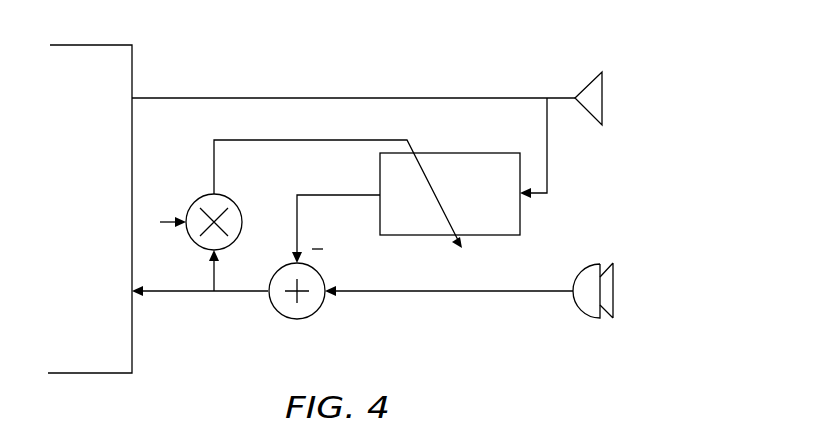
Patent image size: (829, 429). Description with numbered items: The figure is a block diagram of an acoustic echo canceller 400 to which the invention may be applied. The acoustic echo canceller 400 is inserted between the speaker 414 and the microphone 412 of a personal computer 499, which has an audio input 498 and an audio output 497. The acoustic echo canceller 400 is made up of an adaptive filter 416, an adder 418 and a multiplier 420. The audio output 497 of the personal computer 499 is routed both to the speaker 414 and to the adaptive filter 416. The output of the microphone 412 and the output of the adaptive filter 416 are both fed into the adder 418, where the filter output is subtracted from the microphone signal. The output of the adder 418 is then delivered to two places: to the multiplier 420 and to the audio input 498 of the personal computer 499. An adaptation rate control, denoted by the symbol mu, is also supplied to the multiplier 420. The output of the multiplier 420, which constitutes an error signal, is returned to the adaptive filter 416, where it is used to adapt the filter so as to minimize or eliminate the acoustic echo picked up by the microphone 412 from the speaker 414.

The acoustic echo canceller 400 is at (525, 54).
The microphone 412 is at (553, 290).
The speaker 414 is at (632, 135).
The adaptive filter 416 is at (520, 225).
The adder 418 is at (314, 312).
The multiplier 420 is at (233, 200).
The audio output 497 is at (313, 105).
The audio input 498 is at (162, 302).
The personal computer 499 is at (88, 209).